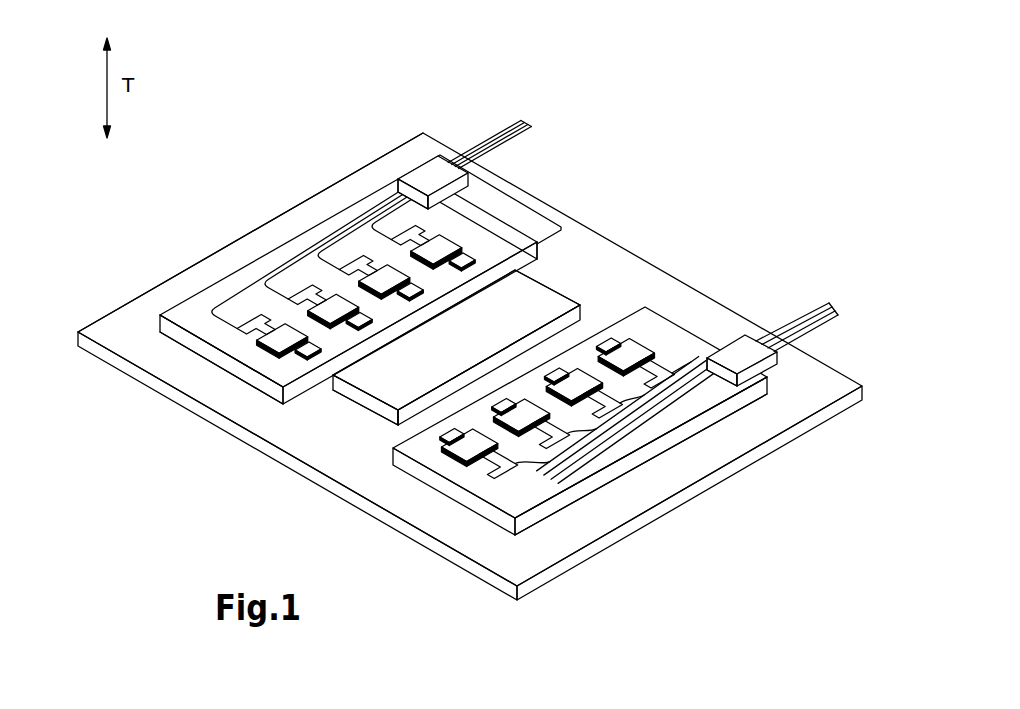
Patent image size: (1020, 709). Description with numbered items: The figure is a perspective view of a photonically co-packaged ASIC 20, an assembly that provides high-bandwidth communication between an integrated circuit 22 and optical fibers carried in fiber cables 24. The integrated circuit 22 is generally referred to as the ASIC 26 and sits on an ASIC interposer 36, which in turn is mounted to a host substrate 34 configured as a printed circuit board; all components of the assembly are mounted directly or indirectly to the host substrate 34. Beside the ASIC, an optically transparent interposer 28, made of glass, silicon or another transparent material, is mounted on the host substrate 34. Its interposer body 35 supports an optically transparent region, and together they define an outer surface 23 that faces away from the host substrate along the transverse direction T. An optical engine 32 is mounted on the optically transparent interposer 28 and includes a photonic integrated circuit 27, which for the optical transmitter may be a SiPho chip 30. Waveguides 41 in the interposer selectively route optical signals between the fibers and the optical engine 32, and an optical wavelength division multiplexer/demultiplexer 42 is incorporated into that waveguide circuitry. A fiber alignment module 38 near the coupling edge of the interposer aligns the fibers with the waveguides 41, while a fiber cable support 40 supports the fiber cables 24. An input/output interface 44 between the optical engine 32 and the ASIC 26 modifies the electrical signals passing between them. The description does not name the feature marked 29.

The photonically co-packaged ASIC 20 is at (484, 98).
The integrated circuit 22 is at (572, 285).
The outer surface 23 is at (470, 227).
The fiber cable 24 is at (507, 147).
The ASIC 26 is at (538, 280).
The photonic integrated circuit 27 is at (227, 353).
The optically transparent interposer 28 is at (272, 236).
The gap 29 is at (403, 385).
The SiPho chip 30 is at (263, 357).
The optical engine 32 is at (265, 368).
The host substrate 34 is at (159, 288).
The interposer body 35 is at (222, 357).
The ASIC interposer 36 is at (338, 428).
The fiber alignment module 38 is at (414, 184).
The fiber cable support 40 is at (431, 168).
The waveguide 41 is at (222, 303).
The optical wavelength division multiplexer/demultiplexer 42 is at (307, 287).
The input/output interface 44 is at (300, 357).